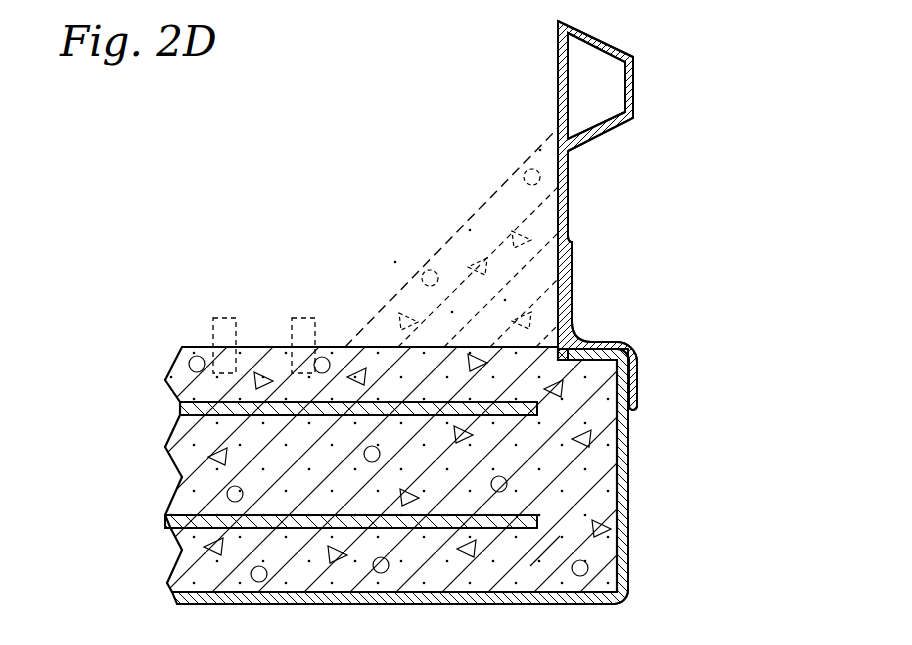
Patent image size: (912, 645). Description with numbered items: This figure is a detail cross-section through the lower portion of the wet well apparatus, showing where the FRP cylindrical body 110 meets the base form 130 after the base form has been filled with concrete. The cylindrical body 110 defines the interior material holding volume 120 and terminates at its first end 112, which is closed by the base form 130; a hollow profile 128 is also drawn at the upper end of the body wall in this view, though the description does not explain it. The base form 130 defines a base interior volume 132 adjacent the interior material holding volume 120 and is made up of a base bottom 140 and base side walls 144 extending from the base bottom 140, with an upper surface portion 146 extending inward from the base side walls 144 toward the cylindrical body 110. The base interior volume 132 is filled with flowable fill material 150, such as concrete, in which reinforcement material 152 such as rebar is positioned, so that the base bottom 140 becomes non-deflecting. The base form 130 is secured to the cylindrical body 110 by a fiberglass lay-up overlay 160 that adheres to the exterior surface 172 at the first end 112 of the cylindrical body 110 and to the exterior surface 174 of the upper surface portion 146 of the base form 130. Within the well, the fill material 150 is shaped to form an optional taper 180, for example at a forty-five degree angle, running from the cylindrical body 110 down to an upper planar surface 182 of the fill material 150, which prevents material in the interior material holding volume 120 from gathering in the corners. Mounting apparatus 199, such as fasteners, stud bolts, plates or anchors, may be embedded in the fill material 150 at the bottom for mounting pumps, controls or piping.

The cylindrical body 110 is at (572, 170).
The first end 112 is at (546, 320).
The interior material holding volume 120 is at (328, 215).
The hollow top loop of frame member 128 is at (633, 88).
The base form 130 is at (628, 608).
The base interior volume 132 is at (556, 544).
The base bottom 140 is at (356, 607).
The base side walls 144 is at (628, 468).
The upper surface portion 146 is at (613, 343).
The flowable fill material 150 is at (514, 452).
The reinforcement material 152 is at (182, 410).
The overlay 160 is at (574, 280).
The exterior surface 172 is at (573, 252).
The exterior surface 174 is at (595, 343).
The taper 180 is at (470, 215).
The upper planar surface 182 is at (197, 347).
The mounting apparatus 199 is at (300, 318).